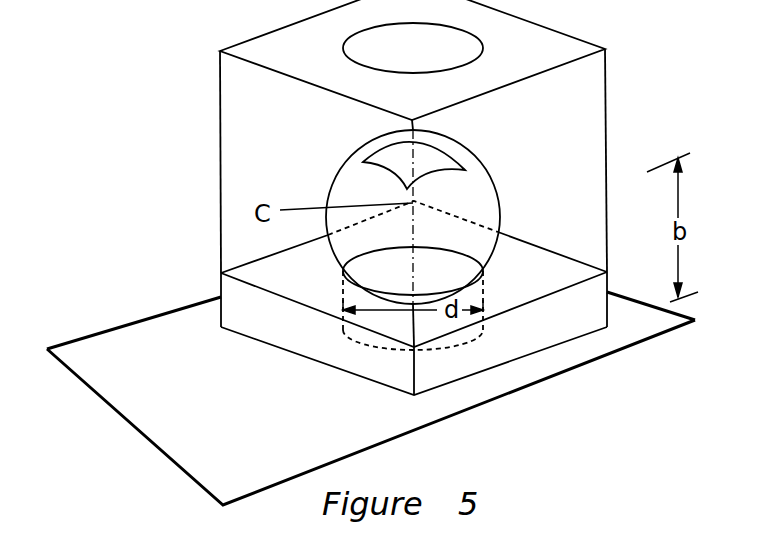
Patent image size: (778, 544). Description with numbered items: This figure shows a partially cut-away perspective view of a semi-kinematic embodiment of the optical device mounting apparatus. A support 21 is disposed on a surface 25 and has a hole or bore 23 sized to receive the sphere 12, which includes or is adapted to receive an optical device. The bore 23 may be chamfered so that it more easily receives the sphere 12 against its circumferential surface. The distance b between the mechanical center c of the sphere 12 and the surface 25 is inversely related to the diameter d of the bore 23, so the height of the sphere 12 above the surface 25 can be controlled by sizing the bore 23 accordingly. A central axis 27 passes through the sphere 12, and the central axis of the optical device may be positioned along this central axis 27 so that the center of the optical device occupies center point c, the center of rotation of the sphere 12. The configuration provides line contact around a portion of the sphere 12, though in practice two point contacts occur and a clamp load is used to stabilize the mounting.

The sphere 12 is at (477, 183).
The support 21 is at (243, 311).
The bore 23 is at (375, 342).
The surface 25 is at (133, 362).
The central axis 27 is at (422, 234).